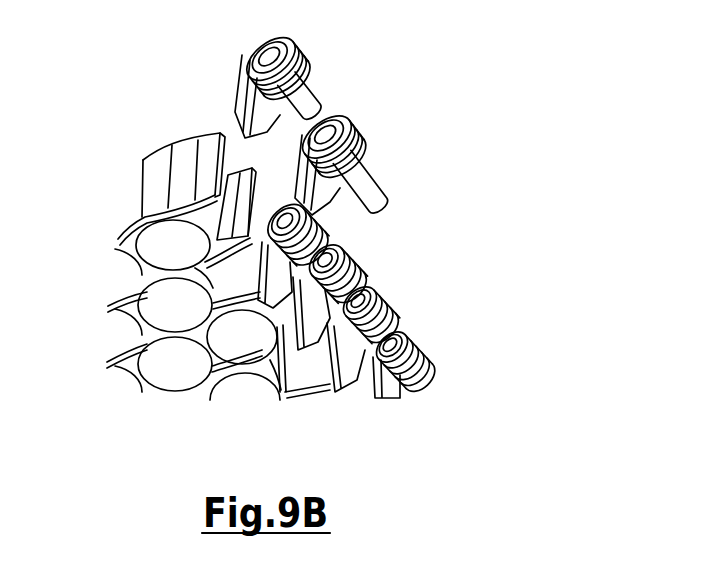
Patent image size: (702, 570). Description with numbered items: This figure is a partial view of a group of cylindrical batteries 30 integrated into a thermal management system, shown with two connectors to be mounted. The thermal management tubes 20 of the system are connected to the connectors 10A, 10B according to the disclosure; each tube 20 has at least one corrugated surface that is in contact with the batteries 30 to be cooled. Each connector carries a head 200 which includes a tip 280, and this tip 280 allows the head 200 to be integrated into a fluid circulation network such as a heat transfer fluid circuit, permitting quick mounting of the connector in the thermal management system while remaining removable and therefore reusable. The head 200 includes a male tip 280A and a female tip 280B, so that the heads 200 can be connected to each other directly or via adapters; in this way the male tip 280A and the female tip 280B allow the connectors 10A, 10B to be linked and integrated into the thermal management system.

The connector 10A is at (314, 83).
The connector 10B is at (314, 83).
The thermal management tube 20 is at (175, 141).
The cylindrical battery 30 is at (165, 305).
The head 200 is at (287, 83).
The tip 280 is at (311, 107).
The male tip 280A is at (373, 198).
The female tip 280B is at (362, 143).